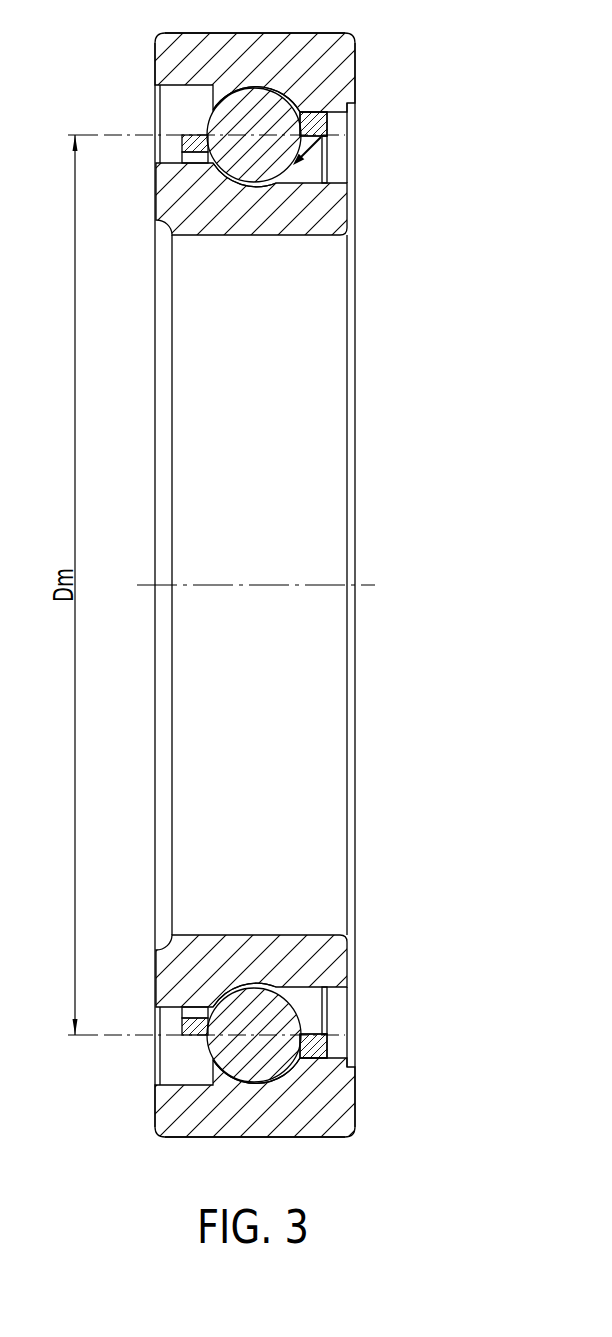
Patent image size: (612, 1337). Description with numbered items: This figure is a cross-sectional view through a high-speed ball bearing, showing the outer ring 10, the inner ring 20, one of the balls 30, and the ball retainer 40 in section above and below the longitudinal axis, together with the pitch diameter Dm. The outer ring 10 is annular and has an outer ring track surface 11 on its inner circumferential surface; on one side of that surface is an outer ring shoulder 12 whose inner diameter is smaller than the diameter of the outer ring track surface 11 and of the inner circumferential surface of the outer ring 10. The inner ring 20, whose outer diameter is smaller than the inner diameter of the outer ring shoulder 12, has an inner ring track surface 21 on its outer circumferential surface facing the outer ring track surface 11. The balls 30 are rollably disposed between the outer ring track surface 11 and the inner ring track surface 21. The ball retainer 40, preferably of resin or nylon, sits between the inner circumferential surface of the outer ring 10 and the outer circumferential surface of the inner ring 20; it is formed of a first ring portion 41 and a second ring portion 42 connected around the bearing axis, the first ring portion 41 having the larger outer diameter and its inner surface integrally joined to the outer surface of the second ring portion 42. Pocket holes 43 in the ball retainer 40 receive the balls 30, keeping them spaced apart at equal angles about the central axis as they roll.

The outer ring 10 is at (355, 34).
The outer ring track surface 11 is at (298, 108).
The outer ring shoulder 12 is at (335, 76).
The inner ring 20 is at (362, 214).
The inner ring track surface 21 is at (215, 166).
The ball 30 is at (302, 166).
The ball retainer 40 is at (340, 115).
The first ring portion 41 is at (315, 125).
The second ring portion 42 is at (194, 150).
The pocket hole 43 is at (196, 139).